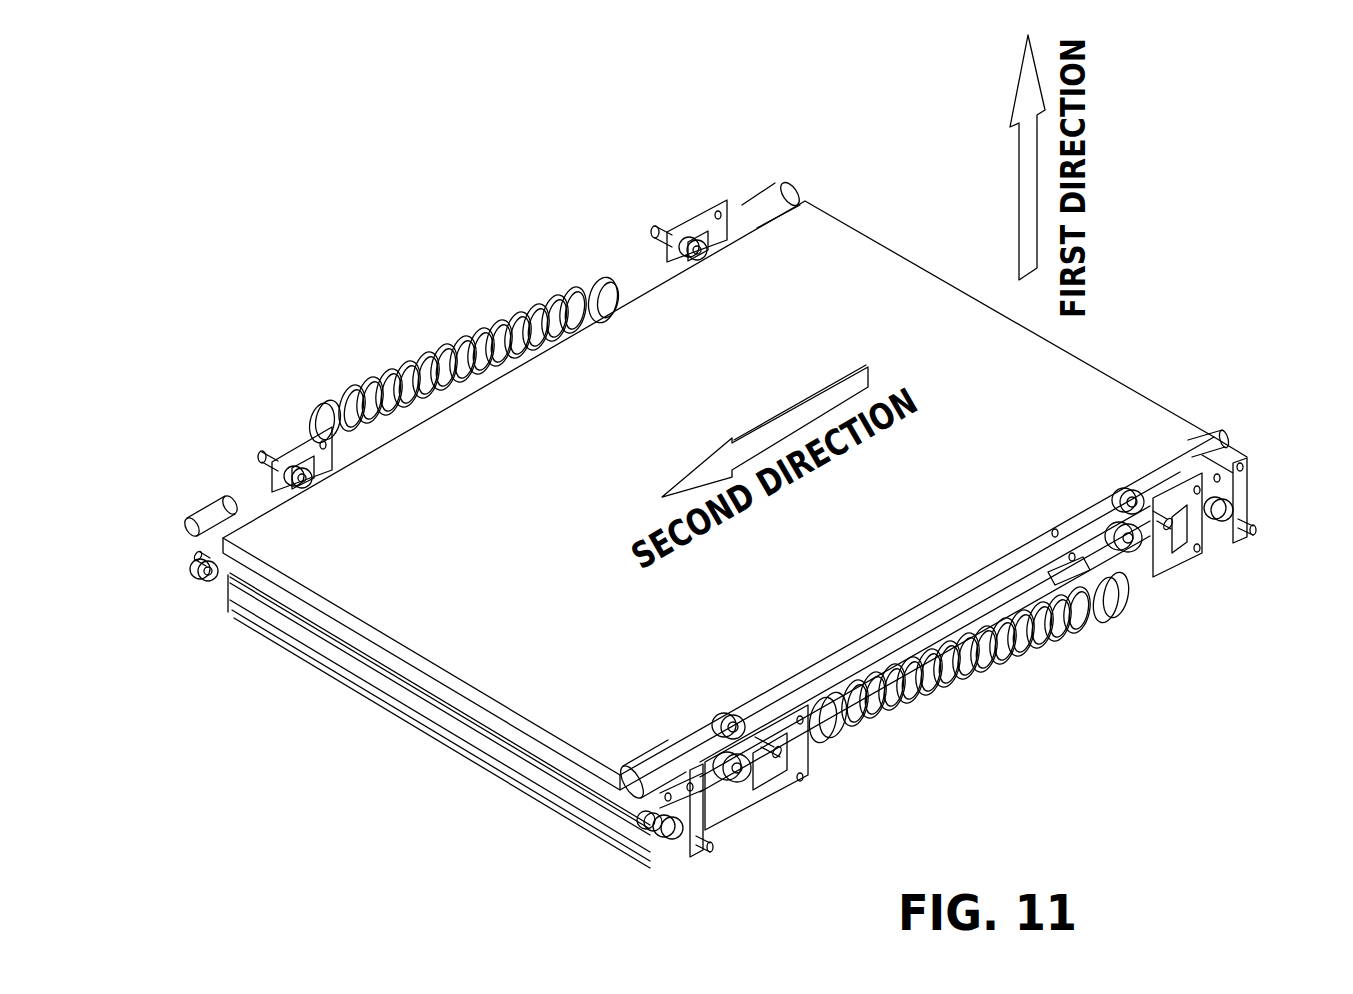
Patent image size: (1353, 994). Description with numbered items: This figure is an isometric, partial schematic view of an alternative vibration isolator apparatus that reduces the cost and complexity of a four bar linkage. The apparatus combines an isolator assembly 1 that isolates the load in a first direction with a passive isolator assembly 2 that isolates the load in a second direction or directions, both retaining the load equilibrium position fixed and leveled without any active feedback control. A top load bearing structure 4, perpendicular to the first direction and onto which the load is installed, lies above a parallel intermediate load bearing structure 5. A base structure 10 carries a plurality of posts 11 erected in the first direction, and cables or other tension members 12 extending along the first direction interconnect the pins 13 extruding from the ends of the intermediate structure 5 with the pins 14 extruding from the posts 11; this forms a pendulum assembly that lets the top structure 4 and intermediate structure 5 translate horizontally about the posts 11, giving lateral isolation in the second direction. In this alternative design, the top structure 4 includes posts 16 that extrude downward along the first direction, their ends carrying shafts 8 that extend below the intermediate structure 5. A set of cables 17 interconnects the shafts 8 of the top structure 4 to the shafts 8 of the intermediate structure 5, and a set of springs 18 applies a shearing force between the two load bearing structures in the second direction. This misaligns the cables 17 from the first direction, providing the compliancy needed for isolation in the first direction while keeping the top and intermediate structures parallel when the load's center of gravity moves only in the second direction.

The isolator assembly 1 is at (392, 637).
The passive isolator assembly 2 is at (450, 703).
The top load bearing structure 4 is at (1080, 387).
The intermediate load bearing structure 5 is at (238, 592).
The shaft 8 is at (217, 573).
The base structure 10 is at (263, 623).
The post 11 is at (706, 213).
The cable or tension member 12 is at (688, 265).
The pin 13 is at (733, 750).
The pin 14 is at (697, 250).
The post 16 is at (208, 512).
The cable 17 is at (202, 570).
The spring 18 is at (480, 355).